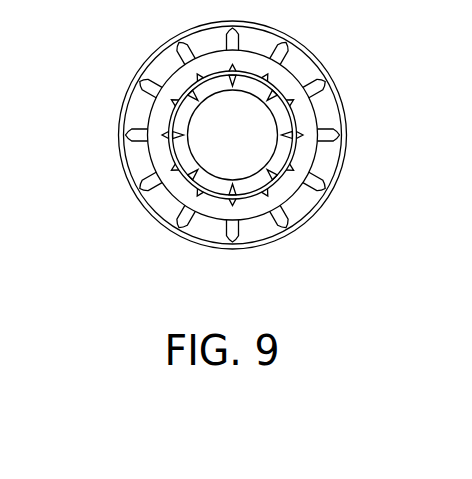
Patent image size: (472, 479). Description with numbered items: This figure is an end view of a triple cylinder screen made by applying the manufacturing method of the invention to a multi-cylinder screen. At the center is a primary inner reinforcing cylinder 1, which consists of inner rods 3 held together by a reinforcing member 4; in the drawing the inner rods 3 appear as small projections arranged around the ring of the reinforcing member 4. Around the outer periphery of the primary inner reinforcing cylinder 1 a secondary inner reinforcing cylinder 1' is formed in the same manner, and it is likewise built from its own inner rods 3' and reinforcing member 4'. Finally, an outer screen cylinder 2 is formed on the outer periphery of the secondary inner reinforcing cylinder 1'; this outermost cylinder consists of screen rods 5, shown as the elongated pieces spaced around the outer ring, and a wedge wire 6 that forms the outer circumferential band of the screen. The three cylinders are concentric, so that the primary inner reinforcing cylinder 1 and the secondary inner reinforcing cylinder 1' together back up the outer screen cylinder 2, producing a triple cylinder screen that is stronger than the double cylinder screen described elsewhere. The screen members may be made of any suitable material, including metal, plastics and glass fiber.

The primary inner reinforcing cylinder 1 is at (233, 135).
The secondary inner reinforcing cylinder 1' is at (216, 157).
The outer screen cylinder 2 is at (118, 148).
The inner rods 3 is at (233, 135).
The inner rods 3' is at (233, 182).
The reinforcing member 4 is at (233, 135).
The reinforcing member 4' is at (232, 180).
The screen rods 5 is at (147, 88).
The wedge wire 6 is at (145, 65).